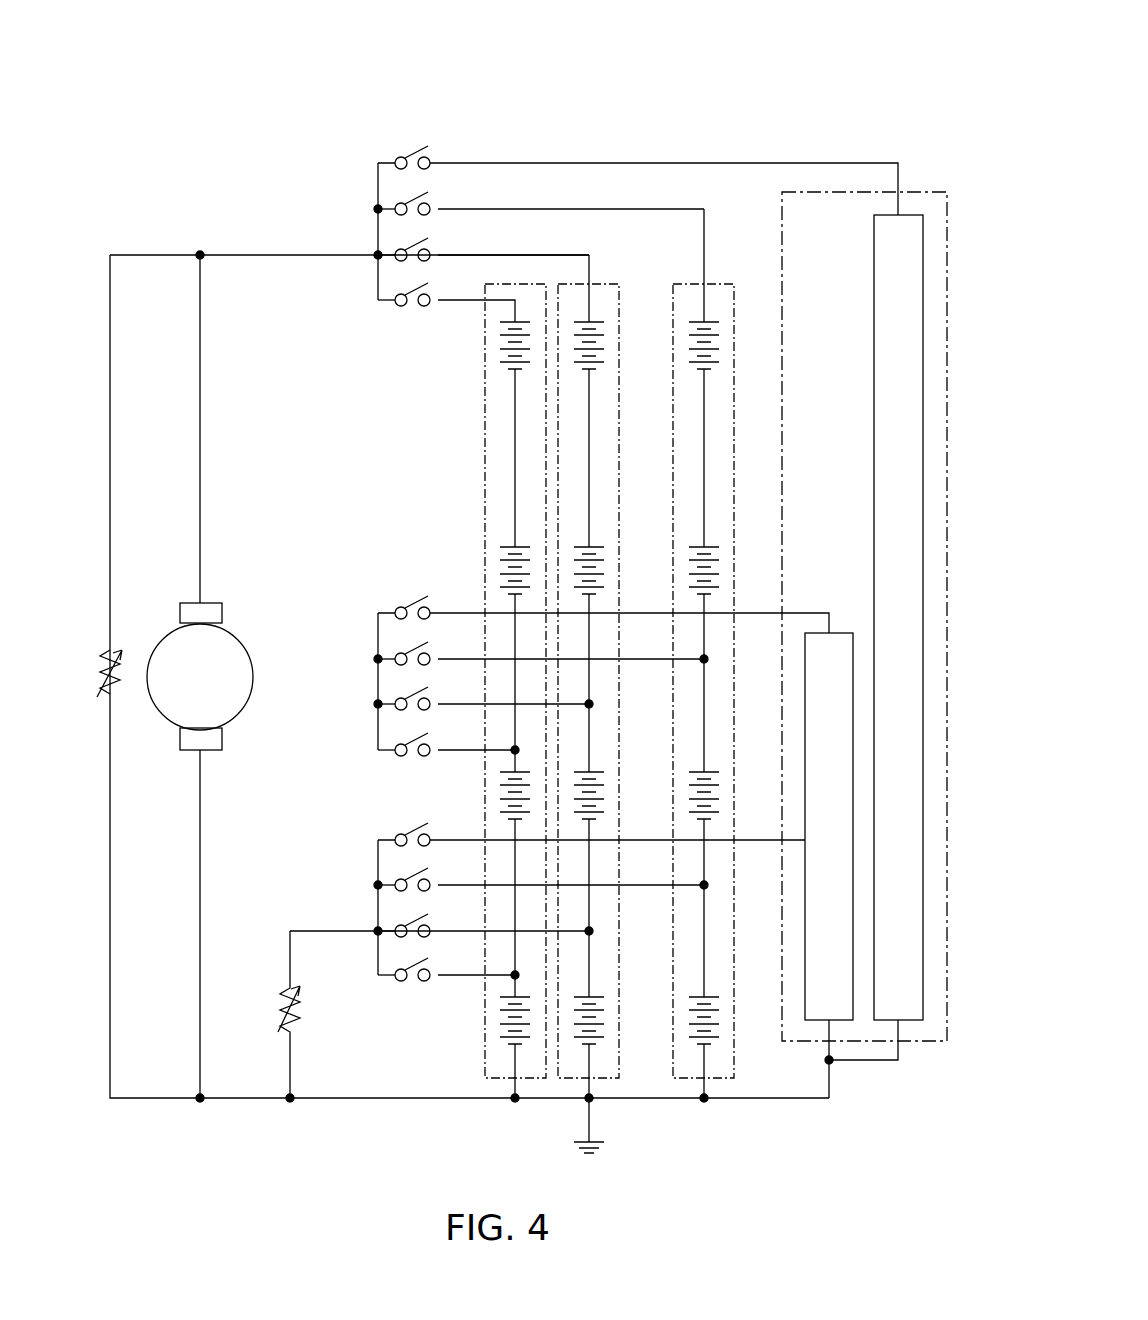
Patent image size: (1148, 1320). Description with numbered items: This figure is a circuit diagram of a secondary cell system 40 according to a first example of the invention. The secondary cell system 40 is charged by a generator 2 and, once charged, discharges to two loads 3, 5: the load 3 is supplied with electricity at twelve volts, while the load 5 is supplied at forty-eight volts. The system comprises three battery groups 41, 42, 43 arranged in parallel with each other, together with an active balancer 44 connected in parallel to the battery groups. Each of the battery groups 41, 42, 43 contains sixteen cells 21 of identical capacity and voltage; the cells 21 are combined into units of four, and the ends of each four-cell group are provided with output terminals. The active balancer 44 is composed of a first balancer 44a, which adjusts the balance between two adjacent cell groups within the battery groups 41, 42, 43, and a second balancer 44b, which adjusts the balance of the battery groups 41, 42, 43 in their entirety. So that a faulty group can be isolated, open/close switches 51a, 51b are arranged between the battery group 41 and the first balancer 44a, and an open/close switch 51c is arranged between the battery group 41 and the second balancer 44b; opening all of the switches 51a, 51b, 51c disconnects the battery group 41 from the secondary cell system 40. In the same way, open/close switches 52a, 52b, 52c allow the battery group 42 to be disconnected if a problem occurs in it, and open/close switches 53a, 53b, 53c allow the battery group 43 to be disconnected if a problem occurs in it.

The secondary cell system 40 is at (779, 58).
The generator 2 is at (210, 691).
The load 3 is at (280, 1008).
The load 5 is at (100, 668).
The cell 21 is at (518, 322).
The battery group 41 is at (508, 689).
The battery group 42 is at (610, 1078).
The battery group 43 is at (718, 1078).
The active balancer 44 is at (872, 612).
The first balancer 44a is at (846, 814).
The second balancer 44b is at (915, 488).
The open/close switch 51a is at (397, 983).
The open/close switch 52a is at (397, 934).
The open/close switch 53a is at (397, 888).
The open/close switch 51b is at (397, 753).
The open/close switch 52b is at (397, 707).
The open/close switch 53b is at (397, 662).
The open/close switch 51c is at (397, 303).
The open/close switch 52c is at (397, 258).
The open/close switch 53c is at (397, 212).